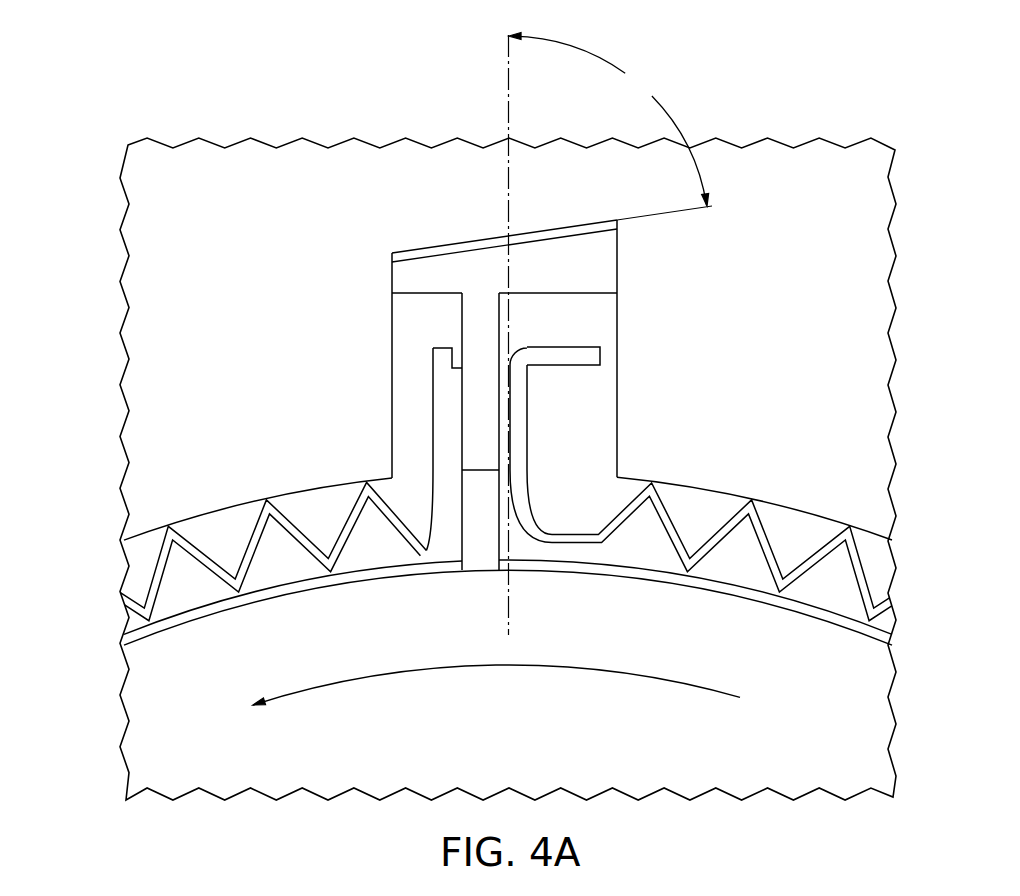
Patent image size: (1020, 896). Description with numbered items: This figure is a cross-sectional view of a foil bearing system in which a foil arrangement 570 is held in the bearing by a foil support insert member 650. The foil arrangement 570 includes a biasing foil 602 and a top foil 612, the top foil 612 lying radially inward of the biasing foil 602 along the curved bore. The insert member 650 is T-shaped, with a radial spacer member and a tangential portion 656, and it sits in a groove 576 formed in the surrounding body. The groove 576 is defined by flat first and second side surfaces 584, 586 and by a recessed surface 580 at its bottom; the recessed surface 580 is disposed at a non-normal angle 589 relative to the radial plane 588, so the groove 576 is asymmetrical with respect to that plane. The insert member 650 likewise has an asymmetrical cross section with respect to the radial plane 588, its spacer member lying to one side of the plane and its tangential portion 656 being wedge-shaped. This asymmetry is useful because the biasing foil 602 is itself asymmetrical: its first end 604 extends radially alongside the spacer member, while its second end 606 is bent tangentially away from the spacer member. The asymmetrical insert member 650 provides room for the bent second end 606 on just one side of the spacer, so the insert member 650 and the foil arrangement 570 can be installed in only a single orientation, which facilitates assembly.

The foil arrangement 570 is at (116, 576).
The groove 576 is at (588, 311).
The recessed surface 580 is at (551, 236).
The first side surface 584 is at (432, 320).
The second side surface 586 is at (618, 415).
The radial plane 588 is at (506, 109).
The non-normal angle 589 is at (609, 120).
The biasing foil 602 is at (340, 497).
The first end 604 is at (437, 403).
The second end 606 is at (528, 424).
The top foil 612 is at (184, 640).
The foil support insert member 650 is at (468, 283).
The tangential portion 656 is at (485, 262).